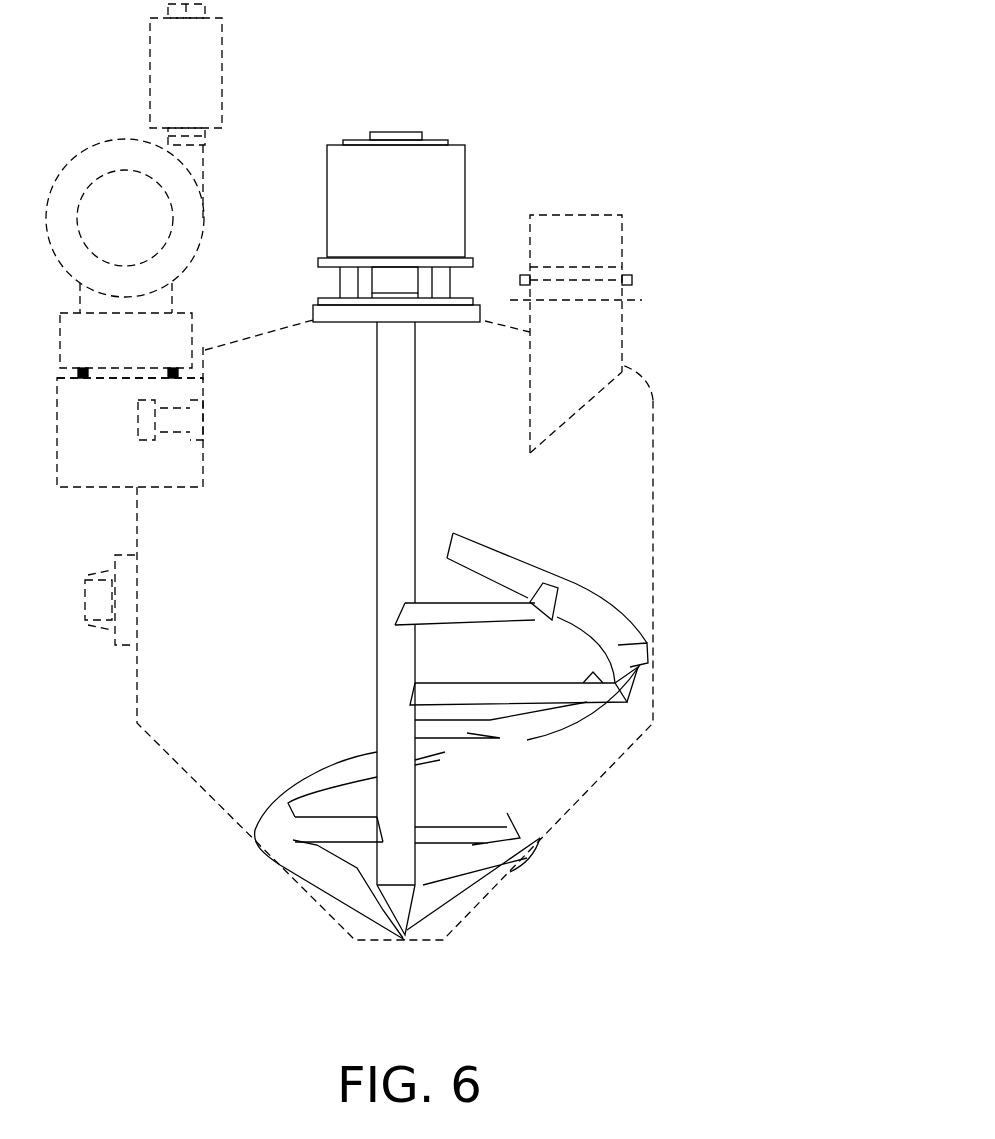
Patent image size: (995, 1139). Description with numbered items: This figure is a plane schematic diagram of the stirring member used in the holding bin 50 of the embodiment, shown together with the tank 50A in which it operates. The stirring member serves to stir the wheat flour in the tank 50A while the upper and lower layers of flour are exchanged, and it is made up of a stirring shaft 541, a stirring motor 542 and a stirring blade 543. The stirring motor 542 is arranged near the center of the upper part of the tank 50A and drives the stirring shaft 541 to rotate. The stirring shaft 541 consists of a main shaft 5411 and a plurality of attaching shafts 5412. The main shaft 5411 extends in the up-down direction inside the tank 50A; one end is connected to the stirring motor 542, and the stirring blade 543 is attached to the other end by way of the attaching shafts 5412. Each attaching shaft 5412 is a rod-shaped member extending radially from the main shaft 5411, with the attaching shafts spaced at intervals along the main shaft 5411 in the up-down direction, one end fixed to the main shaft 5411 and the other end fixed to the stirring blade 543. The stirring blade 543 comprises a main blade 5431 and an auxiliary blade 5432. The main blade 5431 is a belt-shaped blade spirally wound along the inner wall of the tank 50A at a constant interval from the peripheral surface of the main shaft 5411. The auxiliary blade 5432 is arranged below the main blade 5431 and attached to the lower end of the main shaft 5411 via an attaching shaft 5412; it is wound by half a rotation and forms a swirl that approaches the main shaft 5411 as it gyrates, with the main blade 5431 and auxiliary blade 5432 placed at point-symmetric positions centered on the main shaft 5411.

The holding bin 50 is at (344, 324).
The tank 50A is at (653, 422).
The stirring shaft 541 is at (466, 628).
The main shaft 5411 is at (397, 453).
The attaching shaft 5412 is at (350, 815).
The stirring motor 542 is at (443, 213).
The stirring blade 543 is at (515, 730).
The main blade 5431 is at (600, 602).
The auxiliary blade 5432 is at (472, 875).